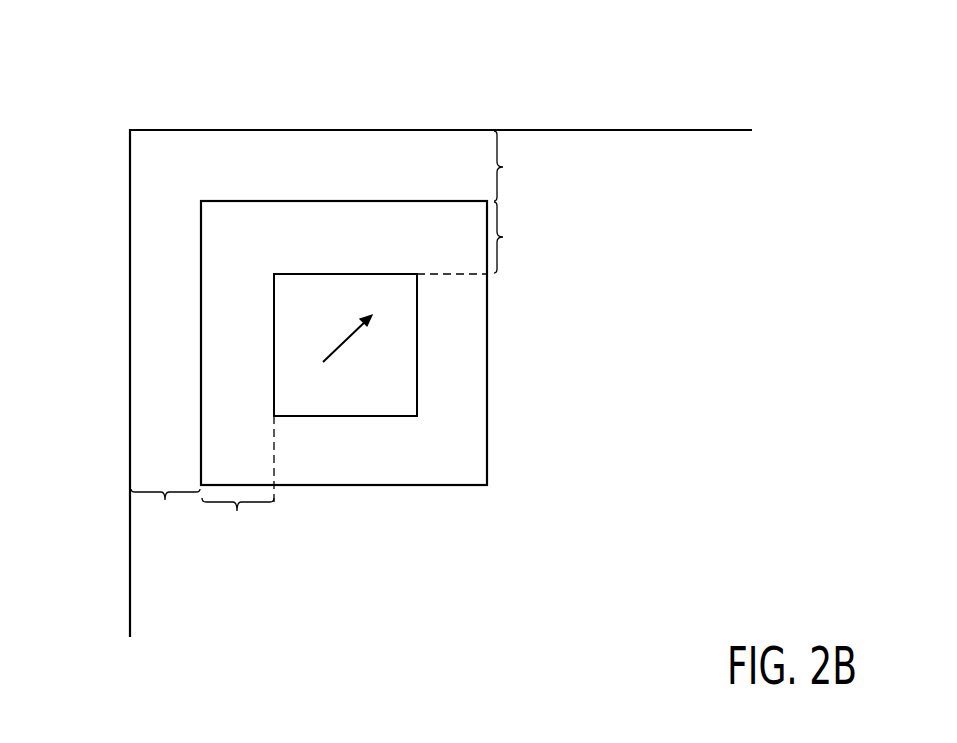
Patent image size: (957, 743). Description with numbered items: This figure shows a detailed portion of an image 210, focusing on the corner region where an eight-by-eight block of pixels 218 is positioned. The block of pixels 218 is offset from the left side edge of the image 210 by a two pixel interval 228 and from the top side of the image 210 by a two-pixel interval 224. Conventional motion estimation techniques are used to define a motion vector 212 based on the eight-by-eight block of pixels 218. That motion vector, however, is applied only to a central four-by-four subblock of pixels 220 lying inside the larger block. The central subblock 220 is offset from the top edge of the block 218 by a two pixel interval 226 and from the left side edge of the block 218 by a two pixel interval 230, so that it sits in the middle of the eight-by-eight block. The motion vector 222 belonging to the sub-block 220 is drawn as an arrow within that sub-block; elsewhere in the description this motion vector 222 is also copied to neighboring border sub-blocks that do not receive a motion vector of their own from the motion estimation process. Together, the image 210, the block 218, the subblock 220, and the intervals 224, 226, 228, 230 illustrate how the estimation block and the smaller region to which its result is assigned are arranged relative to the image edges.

The image 210 is at (160, 130).
The motion vector 212 is at (388, 158).
The eight-by-eight block of pixels 218 is at (272, 200).
The central four-by-four subblock of pixels 220 is at (332, 417).
The motion vector 222 is at (347, 342).
The two-pixel interval 224 is at (520, 166).
The two pixel interval 226 is at (482, 238).
The two pixel interval 228 is at (165, 515).
The two pixel interval 230 is at (238, 483).